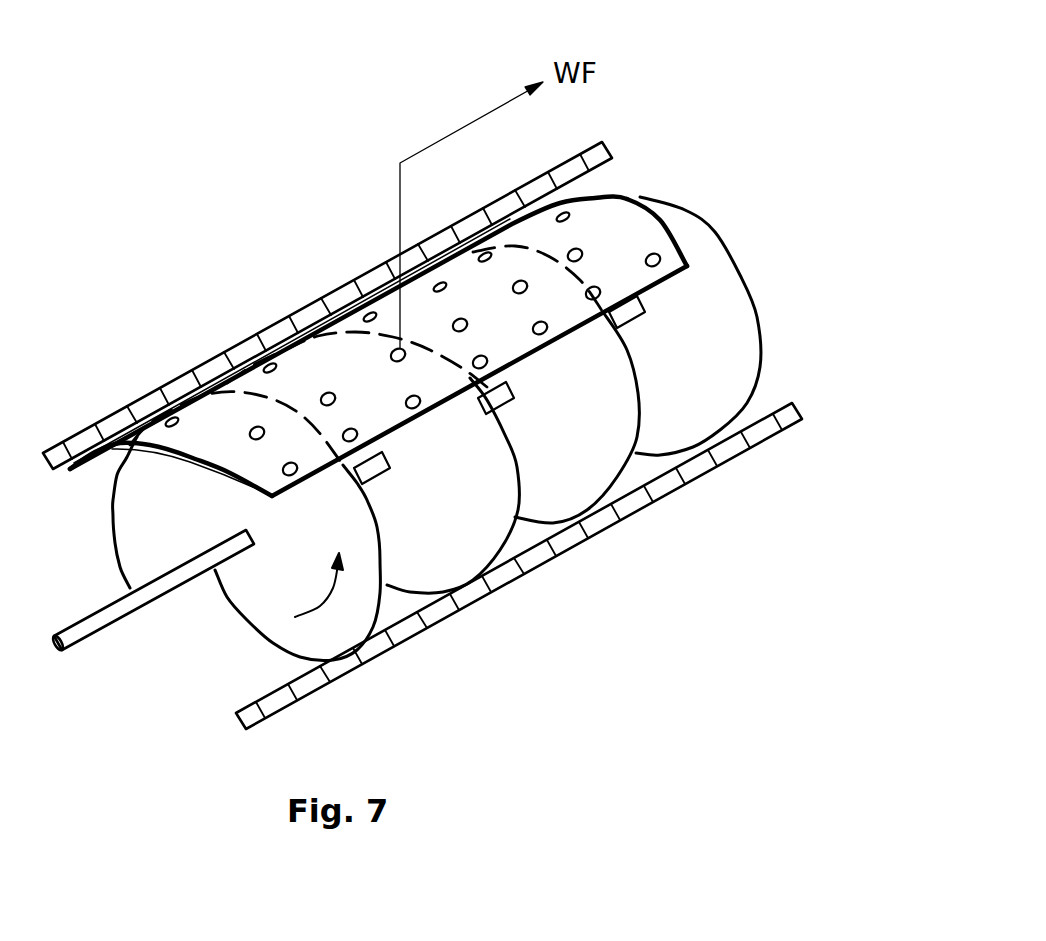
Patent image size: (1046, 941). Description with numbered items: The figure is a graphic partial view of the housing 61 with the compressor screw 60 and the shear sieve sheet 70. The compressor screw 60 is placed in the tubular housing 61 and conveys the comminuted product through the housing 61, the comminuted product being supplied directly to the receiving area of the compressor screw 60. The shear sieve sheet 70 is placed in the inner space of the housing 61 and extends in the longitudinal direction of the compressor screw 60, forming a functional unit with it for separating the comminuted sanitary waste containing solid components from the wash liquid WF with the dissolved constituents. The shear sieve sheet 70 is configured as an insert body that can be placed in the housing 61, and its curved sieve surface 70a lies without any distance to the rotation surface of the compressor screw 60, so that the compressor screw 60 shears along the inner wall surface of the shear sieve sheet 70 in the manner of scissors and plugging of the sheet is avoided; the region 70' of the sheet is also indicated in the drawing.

The compressor screw 60 is at (548, 455).
The housing 61 is at (437, 607).
The shear sieve sheet 70 is at (382, 262).
The sheet end portion 70' is at (716, 209).
The curved sieve surface 70a is at (650, 298).